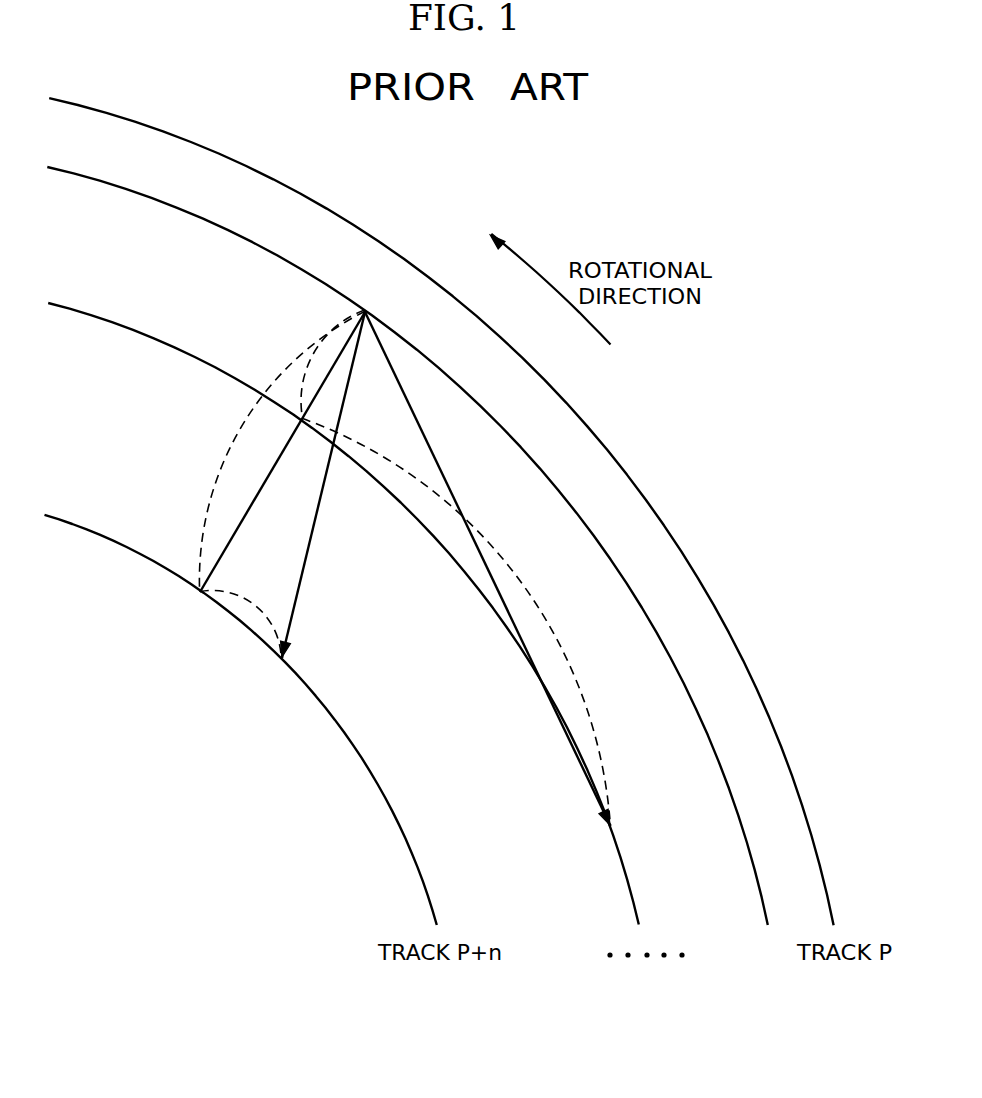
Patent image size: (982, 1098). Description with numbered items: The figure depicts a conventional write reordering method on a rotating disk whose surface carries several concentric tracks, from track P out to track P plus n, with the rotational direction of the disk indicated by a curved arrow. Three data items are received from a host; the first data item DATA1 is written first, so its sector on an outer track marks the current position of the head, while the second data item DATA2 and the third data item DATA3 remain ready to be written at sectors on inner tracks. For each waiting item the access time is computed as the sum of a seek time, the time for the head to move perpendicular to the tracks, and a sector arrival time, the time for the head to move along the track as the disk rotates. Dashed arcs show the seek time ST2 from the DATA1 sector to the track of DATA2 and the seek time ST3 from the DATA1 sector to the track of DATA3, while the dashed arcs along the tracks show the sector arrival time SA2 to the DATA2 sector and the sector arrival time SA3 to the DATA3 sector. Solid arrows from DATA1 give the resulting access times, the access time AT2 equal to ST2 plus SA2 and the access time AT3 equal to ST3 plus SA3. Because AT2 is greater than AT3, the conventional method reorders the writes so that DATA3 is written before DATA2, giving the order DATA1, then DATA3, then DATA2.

The data 1 DATA1 is at (386, 294).
The data 2 DATA2 is at (657, 838).
The data 3 DATA3 is at (254, 681).
The seek time to data 2 sector ST2 is at (310, 368).
The seek time to data 3 sector ST3 is at (279, 451).
The access time to data 2 position AT2 is at (487, 568).
The access time to data 3 position AT3 is at (323, 484).
The sector arrival time to data 2 sector SA2 is at (456, 620).
The sector arrival time to data 3 sector SA3 is at (241, 613).